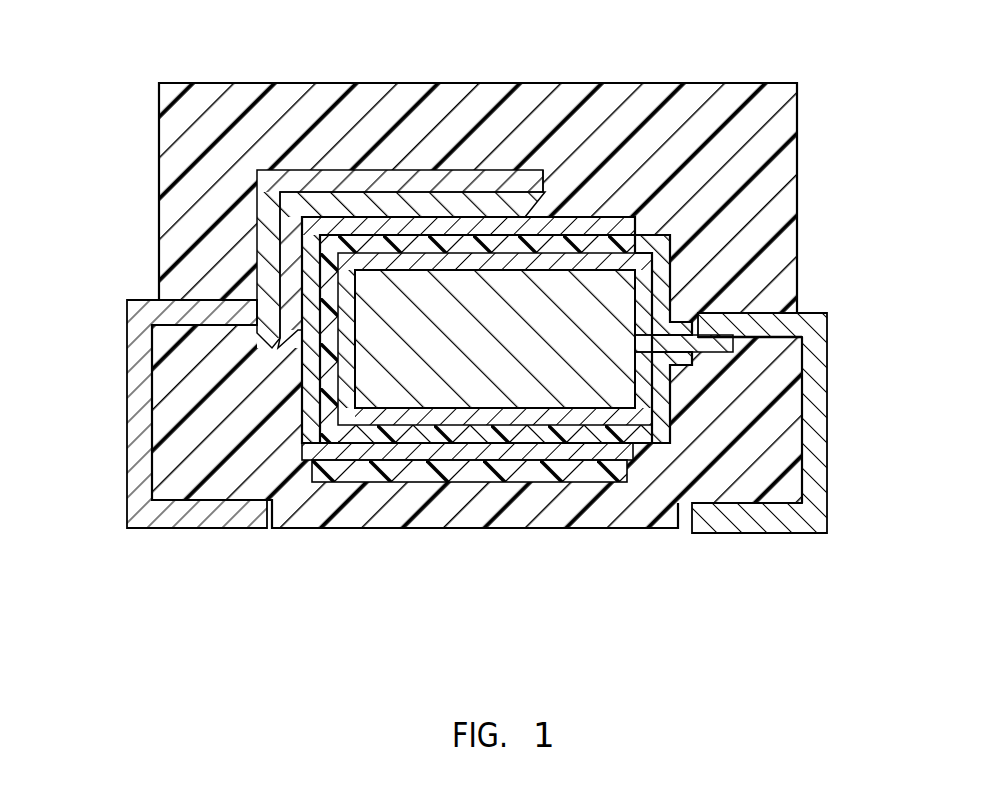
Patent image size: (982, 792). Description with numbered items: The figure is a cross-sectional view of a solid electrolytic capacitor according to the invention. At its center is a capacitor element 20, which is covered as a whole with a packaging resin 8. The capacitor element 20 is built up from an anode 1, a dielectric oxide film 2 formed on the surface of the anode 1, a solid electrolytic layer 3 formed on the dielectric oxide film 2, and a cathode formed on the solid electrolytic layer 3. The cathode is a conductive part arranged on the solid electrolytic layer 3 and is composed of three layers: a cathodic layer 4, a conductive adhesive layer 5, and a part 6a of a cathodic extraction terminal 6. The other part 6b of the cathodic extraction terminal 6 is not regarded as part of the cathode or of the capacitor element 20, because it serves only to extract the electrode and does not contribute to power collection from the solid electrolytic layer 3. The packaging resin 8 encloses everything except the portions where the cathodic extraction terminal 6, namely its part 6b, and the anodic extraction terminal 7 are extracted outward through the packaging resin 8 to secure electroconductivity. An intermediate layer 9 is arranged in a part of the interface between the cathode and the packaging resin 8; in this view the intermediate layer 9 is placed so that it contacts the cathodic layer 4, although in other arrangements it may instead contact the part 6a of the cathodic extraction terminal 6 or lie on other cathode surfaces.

The anode 1 is at (568, 345).
The dielectric oxide film 2 is at (640, 403).
The solid electrolytic layer 3 is at (657, 433).
The cathodic layer 4 is at (430, 450).
The conductive adhesive layer 5 is at (292, 236).
The cathodic extraction terminal 6 is at (128, 430).
The part of cathodic extraction terminal 6a is at (339, 172).
The part of cathodic extraction terminal 6b is at (139, 370).
The anodic extraction terminal 7 is at (822, 462).
The packaging resin 8 is at (318, 508).
The intermediate layer 9 is at (492, 473).
The capacitor element 20 is at (551, 167).